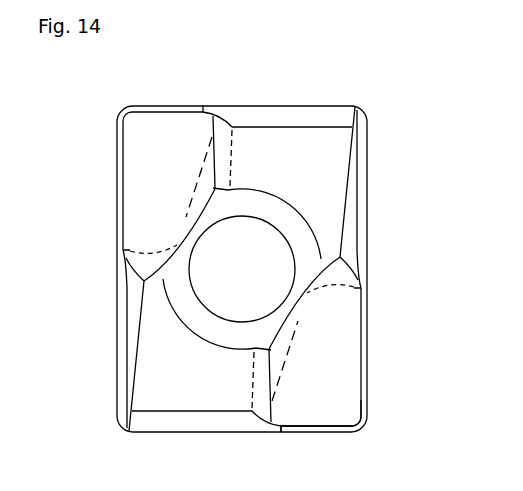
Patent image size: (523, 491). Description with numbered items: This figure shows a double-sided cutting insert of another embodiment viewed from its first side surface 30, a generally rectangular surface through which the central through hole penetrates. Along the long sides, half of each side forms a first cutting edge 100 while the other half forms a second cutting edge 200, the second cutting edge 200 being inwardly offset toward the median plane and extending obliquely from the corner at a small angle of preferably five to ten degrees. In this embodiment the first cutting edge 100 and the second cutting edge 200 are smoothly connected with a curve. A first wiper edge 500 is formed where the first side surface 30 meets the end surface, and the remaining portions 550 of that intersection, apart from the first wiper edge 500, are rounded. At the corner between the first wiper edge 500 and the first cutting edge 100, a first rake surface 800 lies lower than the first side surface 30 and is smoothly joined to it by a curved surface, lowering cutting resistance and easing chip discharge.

The first side surface 30 is at (302, 137).
The first cutting edge 100 is at (117, 187).
The second cutting edge 200 is at (347, 197).
The first wiper edge 500 is at (313, 433).
The rounded portions 550 is at (180, 433).
The first rake surface 800 is at (340, 390).